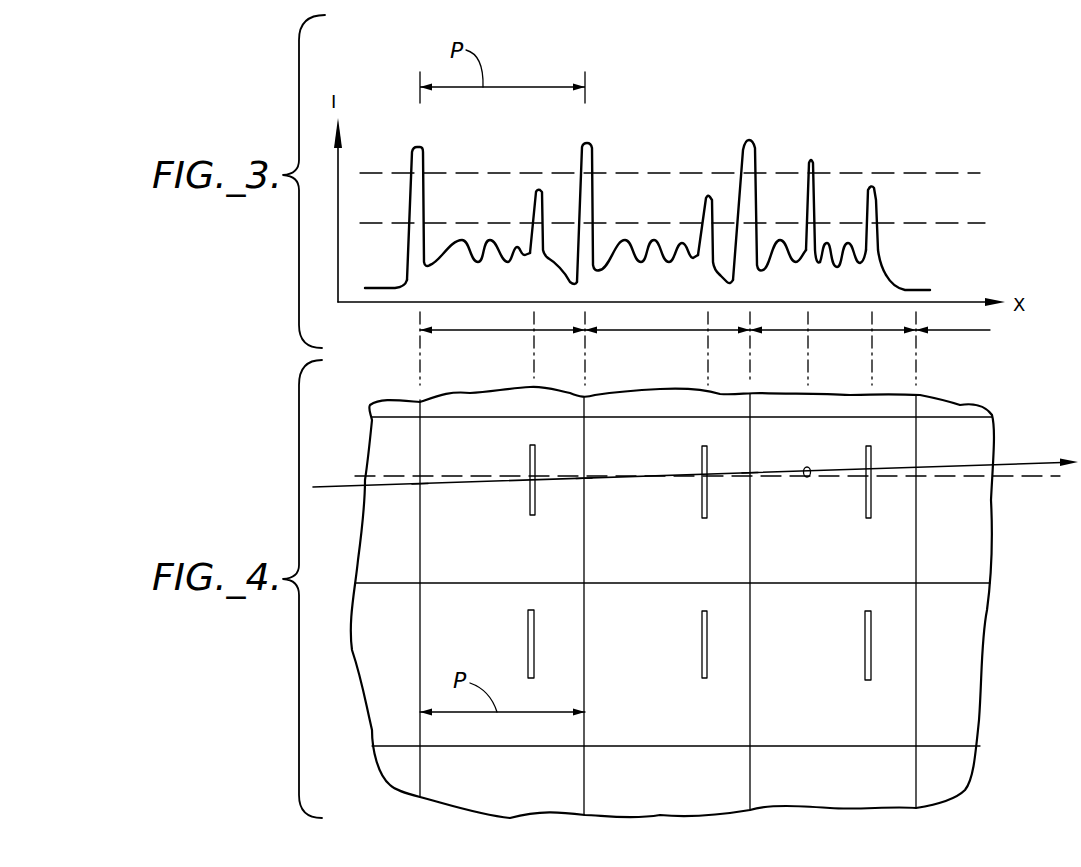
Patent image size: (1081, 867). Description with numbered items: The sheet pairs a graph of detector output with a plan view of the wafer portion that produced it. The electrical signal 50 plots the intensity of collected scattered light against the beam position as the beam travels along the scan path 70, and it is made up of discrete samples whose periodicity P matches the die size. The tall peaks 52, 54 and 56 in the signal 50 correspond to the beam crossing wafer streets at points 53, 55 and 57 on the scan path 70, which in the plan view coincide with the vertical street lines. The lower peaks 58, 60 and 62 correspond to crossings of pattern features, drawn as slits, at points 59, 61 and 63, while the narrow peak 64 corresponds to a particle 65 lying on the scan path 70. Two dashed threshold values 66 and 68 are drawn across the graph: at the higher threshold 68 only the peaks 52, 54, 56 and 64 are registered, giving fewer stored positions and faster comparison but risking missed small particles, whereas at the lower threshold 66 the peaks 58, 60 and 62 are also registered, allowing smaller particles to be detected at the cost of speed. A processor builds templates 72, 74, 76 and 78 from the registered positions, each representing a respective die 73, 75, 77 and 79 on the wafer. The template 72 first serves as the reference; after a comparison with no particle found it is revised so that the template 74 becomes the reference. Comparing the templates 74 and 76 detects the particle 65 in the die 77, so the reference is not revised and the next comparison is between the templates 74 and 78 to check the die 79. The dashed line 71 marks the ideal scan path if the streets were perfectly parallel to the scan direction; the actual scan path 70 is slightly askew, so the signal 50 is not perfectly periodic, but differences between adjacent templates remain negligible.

In FIG. 3, the electrical signal 50 is at (880, 123).
In FIG. 3, the peak 52 is at (415, 146).
In FIG. 3, the peak 54 is at (586, 142).
In FIG. 3, the peak 56 is at (748, 140).
In FIG. 3, the peak 58 is at (537, 190).
In FIG. 3, the peak 60 is at (708, 195).
In FIG. 3, the peak 62 is at (870, 185).
In FIG. 3, the peak 64 is at (811, 158).
In FIG. 3, the lower threshold value 66 is at (950, 224).
In FIG. 3, the upper threshold value 68 is at (948, 174).
In FIG. 3, the template 72 is at (470, 330).
In FIG. 3, the template 74 is at (632, 330).
In FIG. 3, the template 76 is at (815, 330).
In FIG. 3, the template 78 is at (952, 330).
In FIG. 4, the point 53 is at (420, 486).
In FIG. 4, the point 55 is at (585, 486).
In FIG. 4, the point 57 is at (752, 474).
In FIG. 4, the point 59 is at (535, 478).
In FIG. 4, the point 61 is at (708, 476).
In FIG. 4, the point 63 is at (872, 476).
In FIG. 4, the particle 65 is at (808, 478).
In FIG. 4, the scan path 70 is at (1008, 464).
In FIG. 4, the ideal scan path 71 is at (1018, 477).
In FIG. 4, the die 73 is at (512, 577).
In FIG. 4, the die 75 is at (674, 577).
In FIG. 4, the die 77 is at (830, 577).
In FIG. 4, the die 79 is at (967, 577).